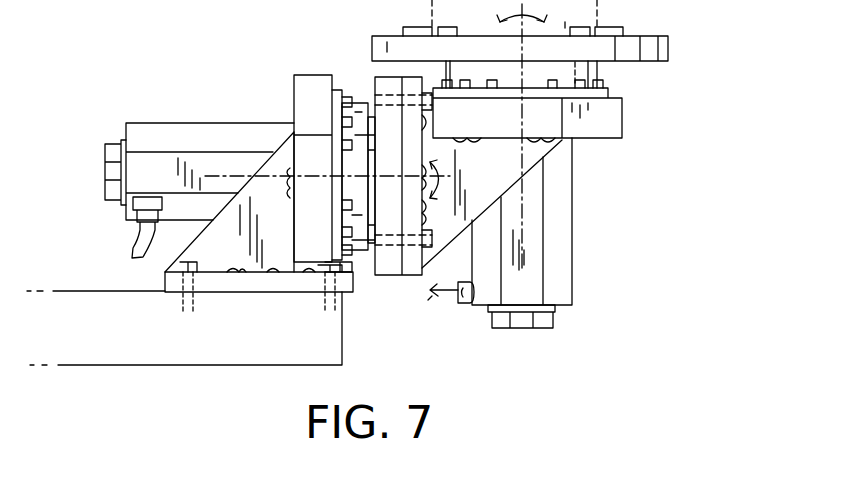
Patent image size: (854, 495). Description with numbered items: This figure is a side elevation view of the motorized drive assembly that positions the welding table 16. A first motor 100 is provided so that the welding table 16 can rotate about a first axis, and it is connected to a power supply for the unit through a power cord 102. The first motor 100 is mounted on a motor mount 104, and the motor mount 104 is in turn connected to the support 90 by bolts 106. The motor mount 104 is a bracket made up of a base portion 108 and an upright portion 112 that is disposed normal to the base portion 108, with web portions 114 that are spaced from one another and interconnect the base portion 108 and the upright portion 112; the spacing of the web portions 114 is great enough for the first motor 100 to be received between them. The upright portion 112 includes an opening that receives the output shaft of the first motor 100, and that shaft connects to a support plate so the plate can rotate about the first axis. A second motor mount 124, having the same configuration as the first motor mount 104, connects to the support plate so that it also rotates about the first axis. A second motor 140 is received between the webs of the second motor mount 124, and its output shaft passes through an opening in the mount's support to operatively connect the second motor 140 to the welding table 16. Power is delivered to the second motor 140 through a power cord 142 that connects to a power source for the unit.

The welding table 16 is at (660, 52).
The support 90 is at (243, 352).
The first motor 100 is at (162, 133).
The power cord 102 is at (136, 250).
The motor mount 104 is at (286, 99).
The bolts 106 is at (167, 307).
The base portion 108 is at (227, 283).
The upright portion 112 is at (308, 85).
The web portions 114 is at (275, 255).
The second motor mount 124 is at (624, 158).
The second motor 140 is at (565, 287).
The power cord 142 is at (446, 300).